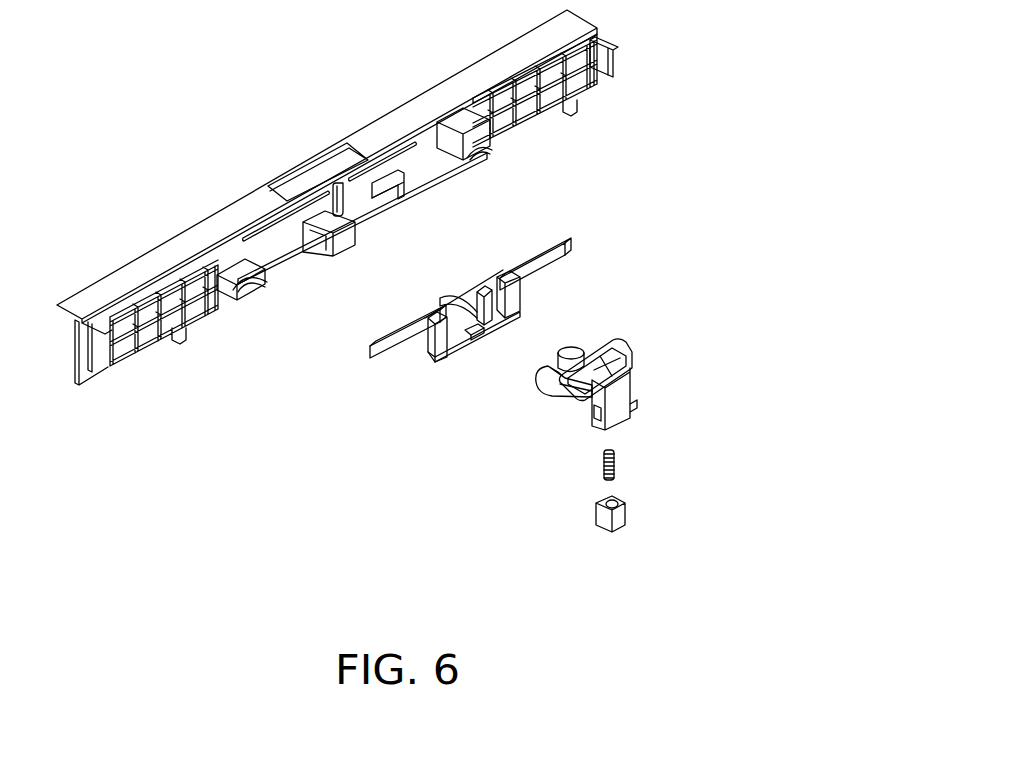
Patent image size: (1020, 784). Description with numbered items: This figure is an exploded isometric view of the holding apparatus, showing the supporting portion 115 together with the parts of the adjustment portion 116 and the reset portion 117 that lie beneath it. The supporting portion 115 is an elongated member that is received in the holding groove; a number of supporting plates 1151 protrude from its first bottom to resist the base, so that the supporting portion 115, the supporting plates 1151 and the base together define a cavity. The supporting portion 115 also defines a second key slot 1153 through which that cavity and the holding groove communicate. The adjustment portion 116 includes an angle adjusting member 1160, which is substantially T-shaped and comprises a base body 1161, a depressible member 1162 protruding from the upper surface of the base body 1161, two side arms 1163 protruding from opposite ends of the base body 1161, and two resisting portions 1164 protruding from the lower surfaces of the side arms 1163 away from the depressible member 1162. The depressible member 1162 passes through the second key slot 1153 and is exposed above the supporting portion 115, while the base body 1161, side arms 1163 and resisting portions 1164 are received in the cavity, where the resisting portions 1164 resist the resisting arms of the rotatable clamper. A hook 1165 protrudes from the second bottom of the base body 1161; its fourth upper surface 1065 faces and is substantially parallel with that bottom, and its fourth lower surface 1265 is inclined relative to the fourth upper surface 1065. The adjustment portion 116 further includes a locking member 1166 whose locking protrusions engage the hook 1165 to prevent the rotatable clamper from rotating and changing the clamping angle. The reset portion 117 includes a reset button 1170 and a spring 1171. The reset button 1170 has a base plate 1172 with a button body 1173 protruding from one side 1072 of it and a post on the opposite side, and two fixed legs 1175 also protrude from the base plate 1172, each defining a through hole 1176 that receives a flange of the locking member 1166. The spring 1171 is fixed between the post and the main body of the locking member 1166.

The supporting portion 115 is at (371, 197).
The supporting plates 1151 is at (613, 62).
The second key slot 1153 is at (335, 186).
The adjustment portion 116 is at (528, 372).
The angle adjusting member 1160 is at (468, 310).
The base body 1161 is at (470, 296).
The depressible member 1162 is at (452, 295).
The side arms 1163 is at (562, 256).
The resisting portions 1164 is at (548, 252).
The hook 1165 is at (373, 265).
The fourth lower surface 1265 is at (450, 302).
The fourth upper surface 1065 is at (436, 312).
The reset portion 117 is at (617, 389).
The reset button 1170 is at (593, 371).
The spring 1171 is at (663, 463).
The base plate 1172 is at (555, 398).
The button body 1173 is at (571, 347).
The side of the base plate 1072 is at (548, 372).
The fixed legs 1175 is at (636, 415).
The through hole 1176 is at (593, 418).
The locking member 1166 is at (538, 525).